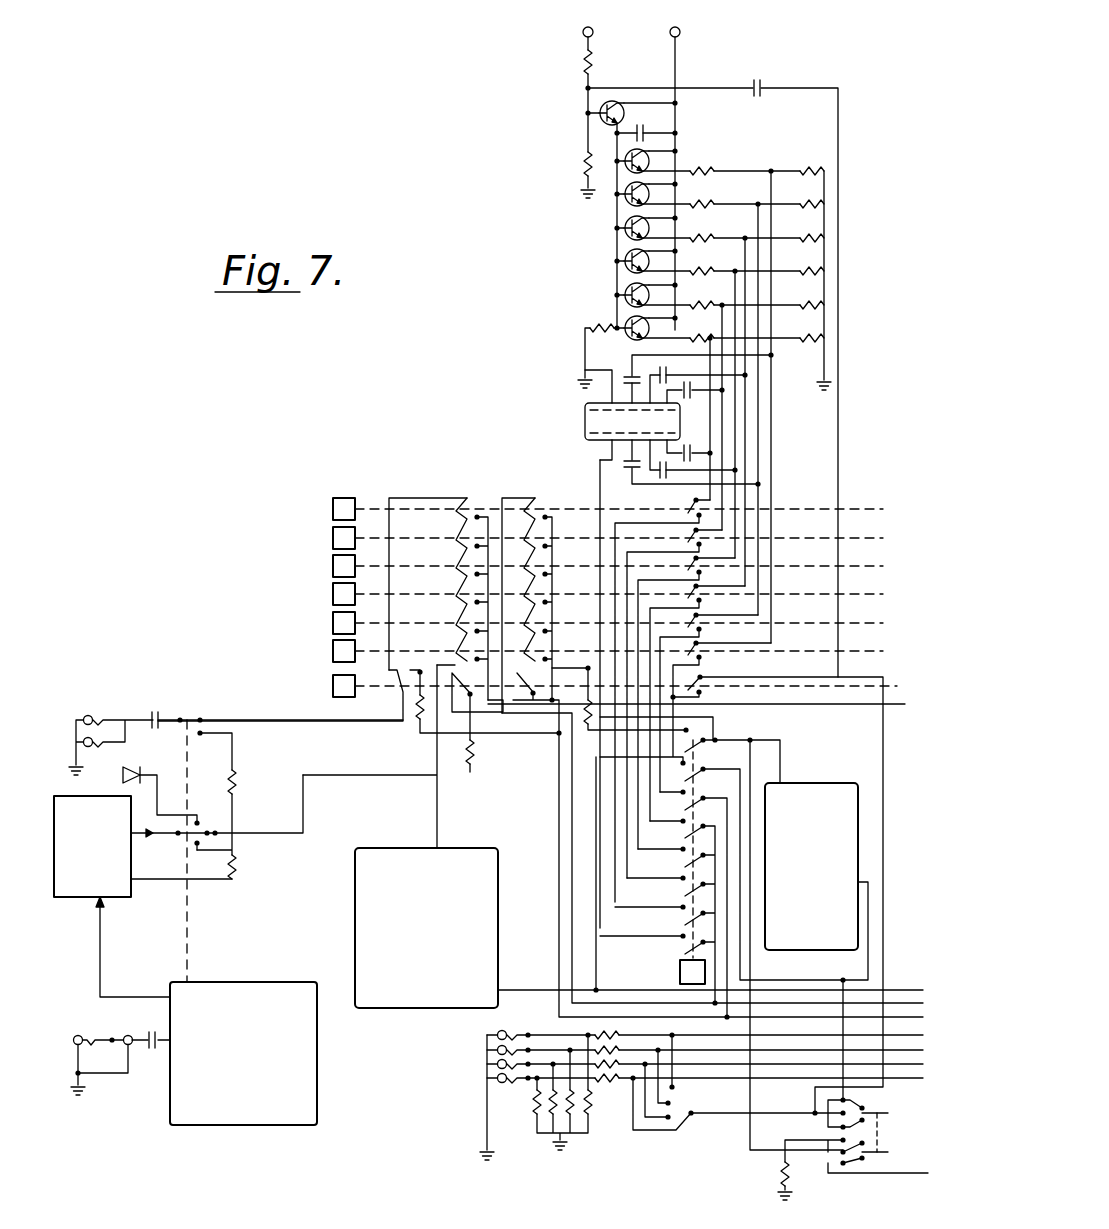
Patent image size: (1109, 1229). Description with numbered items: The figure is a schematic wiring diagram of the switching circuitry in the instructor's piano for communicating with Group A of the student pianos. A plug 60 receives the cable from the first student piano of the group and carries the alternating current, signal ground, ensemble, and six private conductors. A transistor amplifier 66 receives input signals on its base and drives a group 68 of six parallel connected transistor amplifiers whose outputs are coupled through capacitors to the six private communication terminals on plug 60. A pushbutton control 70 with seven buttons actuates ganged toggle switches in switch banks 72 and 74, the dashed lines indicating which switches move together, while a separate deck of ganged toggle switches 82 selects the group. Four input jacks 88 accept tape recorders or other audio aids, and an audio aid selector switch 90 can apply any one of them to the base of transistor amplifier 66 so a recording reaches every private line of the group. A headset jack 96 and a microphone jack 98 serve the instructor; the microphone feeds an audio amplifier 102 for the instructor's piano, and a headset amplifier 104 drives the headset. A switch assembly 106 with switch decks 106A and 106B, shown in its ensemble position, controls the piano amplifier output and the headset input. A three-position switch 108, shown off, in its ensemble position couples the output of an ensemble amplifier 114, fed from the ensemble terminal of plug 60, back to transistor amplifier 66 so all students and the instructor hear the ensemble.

The plug 60 is at (587, 422).
The transistor amplifier 66 is at (600, 117).
The group of parallel connected transistor amplifiers 68 is at (622, 212).
The pushbutton control 70 is at (350, 492).
The switch bank 72 is at (477, 498).
The switch bank 74 is at (553, 500).
The deck of ganged toggle switches 82 is at (672, 946).
The input jacks 88 is at (487, 1053).
The audio aid selector switch 90 is at (650, 1135).
The headset jack 96 is at (100, 712).
The microphone jack 98 is at (88, 1028).
The audio amplifier 102 is at (122, 890).
The headset amplifier 104 is at (355, 936).
The switch assembly 106 is at (300, 1108).
The switch deck 106A is at (200, 712).
The switch deck 106B is at (207, 826).
The three-position switch 108 is at (820, 1162).
The ensemble amplifier 114 is at (832, 782).